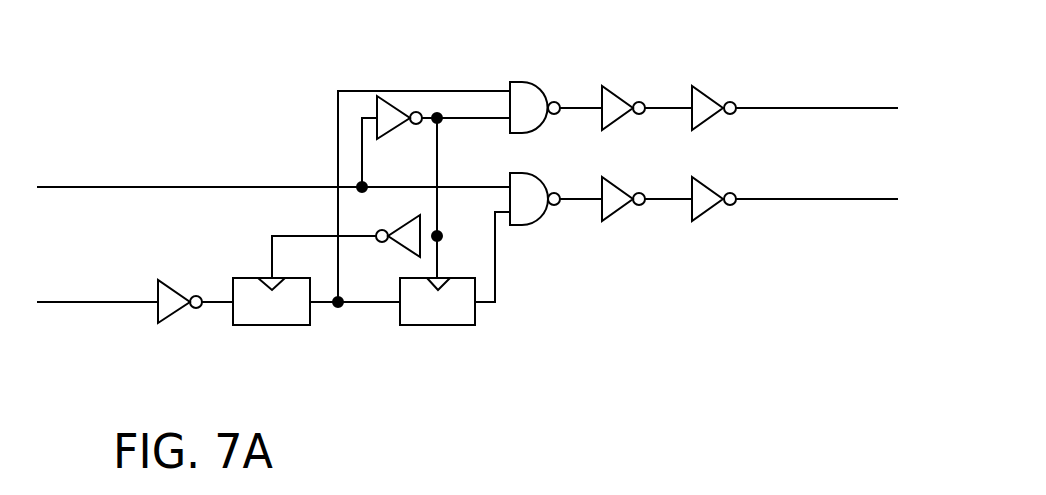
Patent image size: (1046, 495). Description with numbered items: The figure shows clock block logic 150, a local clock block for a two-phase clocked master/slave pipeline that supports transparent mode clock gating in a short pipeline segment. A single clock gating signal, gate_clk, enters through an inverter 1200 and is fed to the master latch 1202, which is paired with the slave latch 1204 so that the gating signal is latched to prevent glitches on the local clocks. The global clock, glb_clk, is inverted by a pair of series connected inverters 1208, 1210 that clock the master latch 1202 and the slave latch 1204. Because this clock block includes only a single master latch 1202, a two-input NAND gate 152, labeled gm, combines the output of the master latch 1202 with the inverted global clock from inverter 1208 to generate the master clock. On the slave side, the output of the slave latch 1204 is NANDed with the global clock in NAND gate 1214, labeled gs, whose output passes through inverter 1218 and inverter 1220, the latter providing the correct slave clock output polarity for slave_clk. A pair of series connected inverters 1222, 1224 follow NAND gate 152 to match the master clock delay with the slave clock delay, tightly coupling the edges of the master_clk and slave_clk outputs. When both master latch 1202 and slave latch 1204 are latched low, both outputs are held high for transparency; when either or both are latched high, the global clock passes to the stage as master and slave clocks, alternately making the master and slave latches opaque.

The clock block logic 150 is at (670, 409).
The 2 input NAND gate 152 is at (557, 68).
The inverter 1200 is at (175, 288).
The master latch 1202 is at (243, 277).
The slave latch 1204 is at (443, 327).
The inverter 1208 is at (393, 107).
The inverter 1210 is at (408, 223).
The NAND gate 1214 is at (557, 162).
The inverter 1218 is at (618, 185).
The inverter 1220 is at (708, 185).
The inverter 1222 is at (618, 95).
The inverter 1224 is at (708, 95).